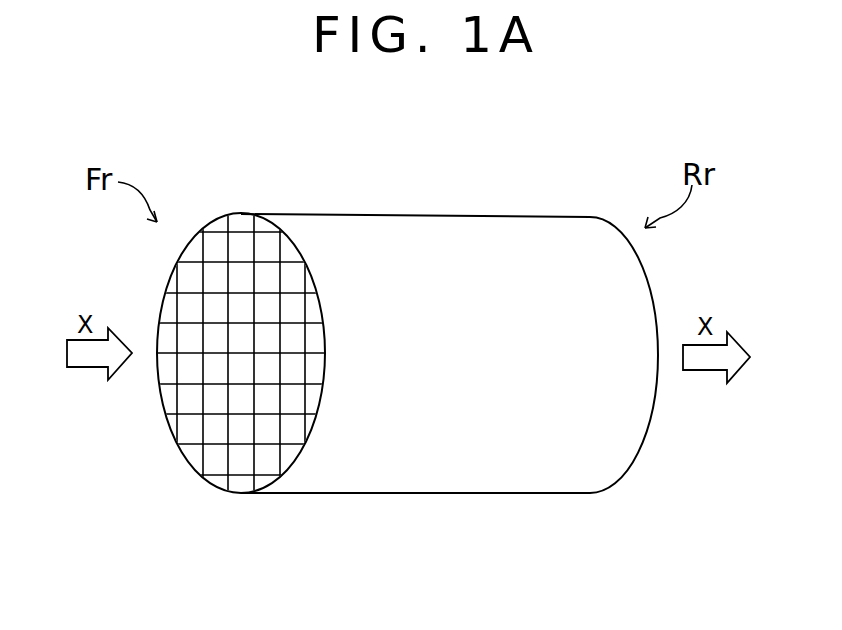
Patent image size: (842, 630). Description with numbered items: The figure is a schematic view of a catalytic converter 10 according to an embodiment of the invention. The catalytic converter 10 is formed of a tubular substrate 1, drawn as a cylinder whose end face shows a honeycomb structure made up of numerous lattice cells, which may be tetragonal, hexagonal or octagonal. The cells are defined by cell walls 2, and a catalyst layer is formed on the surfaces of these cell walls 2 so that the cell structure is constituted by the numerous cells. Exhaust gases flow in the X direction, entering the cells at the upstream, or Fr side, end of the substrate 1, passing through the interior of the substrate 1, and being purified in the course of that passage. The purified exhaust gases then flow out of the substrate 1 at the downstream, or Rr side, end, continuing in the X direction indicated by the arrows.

The substrate 1 is at (448, 222).
The cell walls 2 is at (200, 427).
The catalytic converter 10 is at (390, 366).